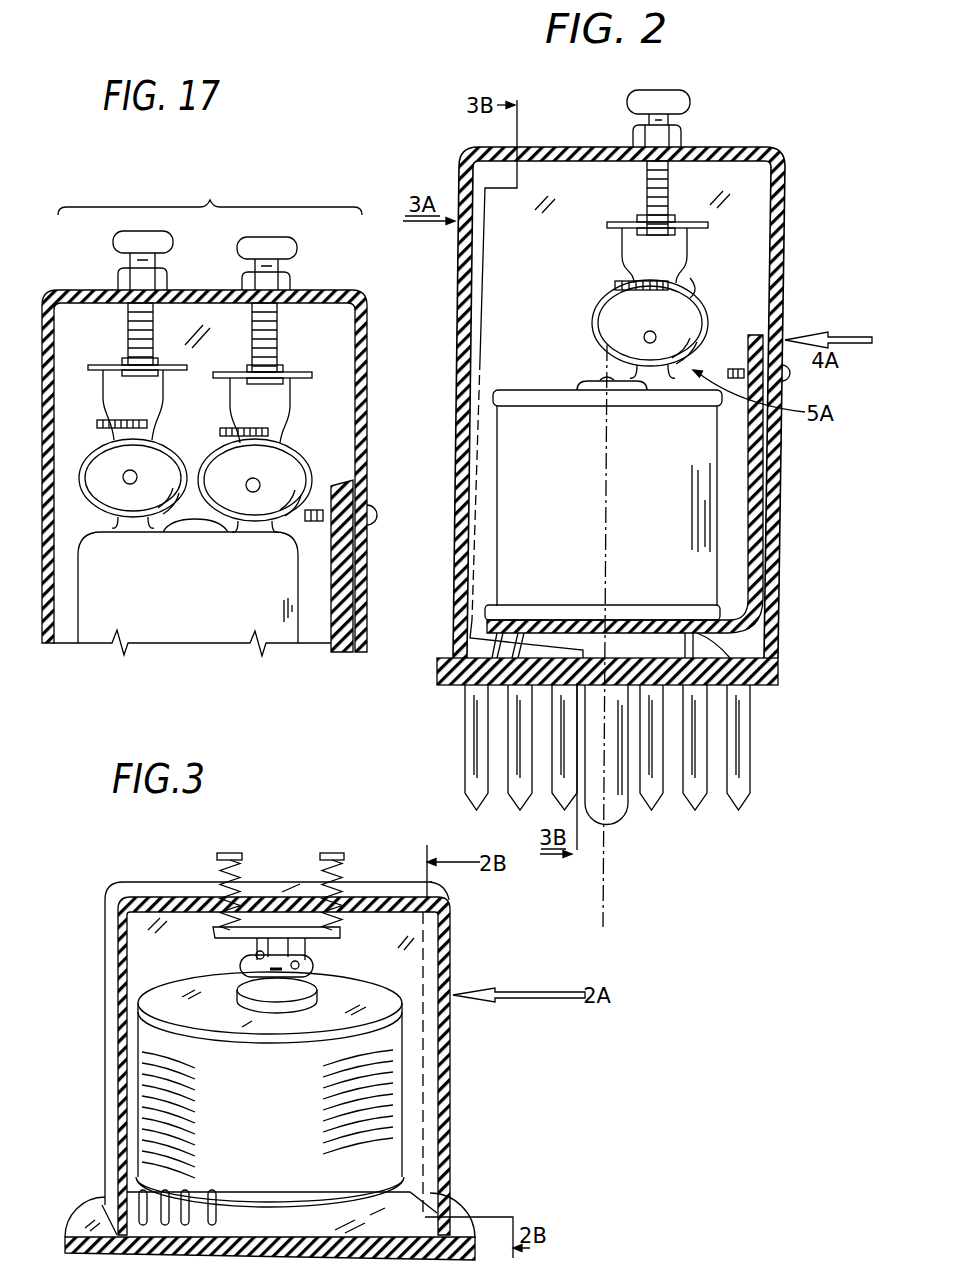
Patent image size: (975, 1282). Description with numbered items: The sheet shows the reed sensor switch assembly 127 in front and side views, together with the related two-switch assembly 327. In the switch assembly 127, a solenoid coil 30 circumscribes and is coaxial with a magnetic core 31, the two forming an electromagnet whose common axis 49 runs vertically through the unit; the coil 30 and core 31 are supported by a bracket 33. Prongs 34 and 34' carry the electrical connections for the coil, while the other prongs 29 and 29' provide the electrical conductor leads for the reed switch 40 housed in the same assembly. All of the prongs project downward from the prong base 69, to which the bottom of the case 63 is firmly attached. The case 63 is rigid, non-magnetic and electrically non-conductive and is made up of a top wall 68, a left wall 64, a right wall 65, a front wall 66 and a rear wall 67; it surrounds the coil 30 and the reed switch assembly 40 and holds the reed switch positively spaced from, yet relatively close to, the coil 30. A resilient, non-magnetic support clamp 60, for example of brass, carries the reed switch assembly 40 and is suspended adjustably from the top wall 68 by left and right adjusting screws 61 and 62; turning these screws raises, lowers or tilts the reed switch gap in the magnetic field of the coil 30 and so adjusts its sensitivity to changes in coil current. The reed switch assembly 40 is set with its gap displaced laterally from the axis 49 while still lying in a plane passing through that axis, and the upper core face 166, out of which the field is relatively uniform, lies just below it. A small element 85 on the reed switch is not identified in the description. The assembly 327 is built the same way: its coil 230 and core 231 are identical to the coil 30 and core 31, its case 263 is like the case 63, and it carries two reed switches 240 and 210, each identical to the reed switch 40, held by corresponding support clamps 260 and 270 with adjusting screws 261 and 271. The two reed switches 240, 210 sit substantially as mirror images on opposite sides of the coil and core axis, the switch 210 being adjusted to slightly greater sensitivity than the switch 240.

In FIG. 2, the prong 29 is at (441, 747).
In FIG. 2, the prong 29' is at (468, 747).
In FIG. 2, the solenoid coil 30 is at (530, 524).
In FIG. 2, the magnetic core 31 is at (582, 383).
In FIG. 3, the magnetic core 31 is at (308, 989).
In FIG. 2, the bracket 33 is at (748, 580).
In FIG. 2, the prong 34 is at (765, 747).
In FIG. 2, the prong 34' is at (744, 747).
In FIG. 2, the reed switch assembly 40 is at (683, 318).
In FIG. 3, the reed switch assembly 40 is at (240, 966).
In FIG. 2, the axis 49 is at (604, 888).
In FIG. 2, the support clamp 60 is at (592, 325).
In FIG. 3, the support clamp 60 is at (262, 976).
In FIG. 2, the left adjusting screw 61 is at (642, 105).
In FIG. 3, the left adjusting screw 61 is at (222, 863).
In FIG. 3, the right adjusting screw 62 is at (322, 857).
In FIG. 3, the case 63 is at (107, 1110).
In FIG. 3, the left wall 64 is at (105, 1068).
In FIG. 3, the right wall 65 is at (448, 1058).
In FIG. 2, the front wall 66 is at (453, 412).
In FIG. 2, the rear wall 67 is at (783, 235).
In FIG. 2, the top wall 68 is at (566, 145).
In FIG. 3, the top wall 68 is at (148, 893).
In FIG. 2, the prong base 69 is at (440, 656).
In FIG. 3, the prong base 69 is at (440, 1247).
In FIG. 2, the pivot pin 85 is at (645, 335).
In FIG. 3, the pivot pin 85 is at (300, 964).
In FIG. 2, the reed sensor switch assembly 127 is at (762, 153).
In FIG. 3, the reed sensor switch assembly 127 is at (452, 938).
In FIG. 2, the upper core face 166 is at (603, 376).
In FIG. 17, the reed switch 210 is at (257, 477).
In FIG. 17, the coil 230 is at (94, 585).
In FIG. 17, the core 231 is at (200, 530).
In FIG. 17, the reed switch 240 is at (105, 474).
In FIG. 17, the support clamp 260 is at (103, 393).
In FIG. 17, the adjusting screw 261 is at (117, 244).
In FIG. 17, the case 263 is at (226, 295).
In FIG. 17, the support clamp 270 is at (294, 405).
In FIG. 17, the adjusting screw 271 is at (297, 258).
In FIG. 17, the switch assembly 327 is at (210, 198).